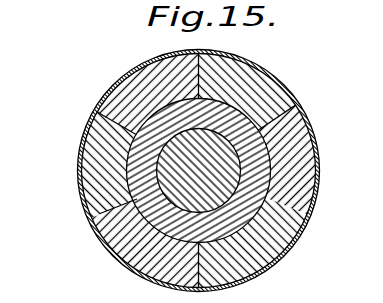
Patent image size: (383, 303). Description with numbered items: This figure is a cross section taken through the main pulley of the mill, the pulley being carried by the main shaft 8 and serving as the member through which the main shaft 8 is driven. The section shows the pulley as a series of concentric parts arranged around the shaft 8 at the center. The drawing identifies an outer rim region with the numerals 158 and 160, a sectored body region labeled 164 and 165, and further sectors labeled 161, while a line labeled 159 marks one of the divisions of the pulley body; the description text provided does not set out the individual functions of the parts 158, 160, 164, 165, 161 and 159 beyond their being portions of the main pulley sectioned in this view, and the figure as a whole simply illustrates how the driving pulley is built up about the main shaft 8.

The cable 158 is at (302, 96).
The outer sheath 160 is at (290, 93).
The segment 164 is at (278, 88).
The segment 165 is at (255, 72).
The segment 161 is at (108, 247).
The joint line 159 is at (100, 214).
The main shaft 8 is at (235, 188).